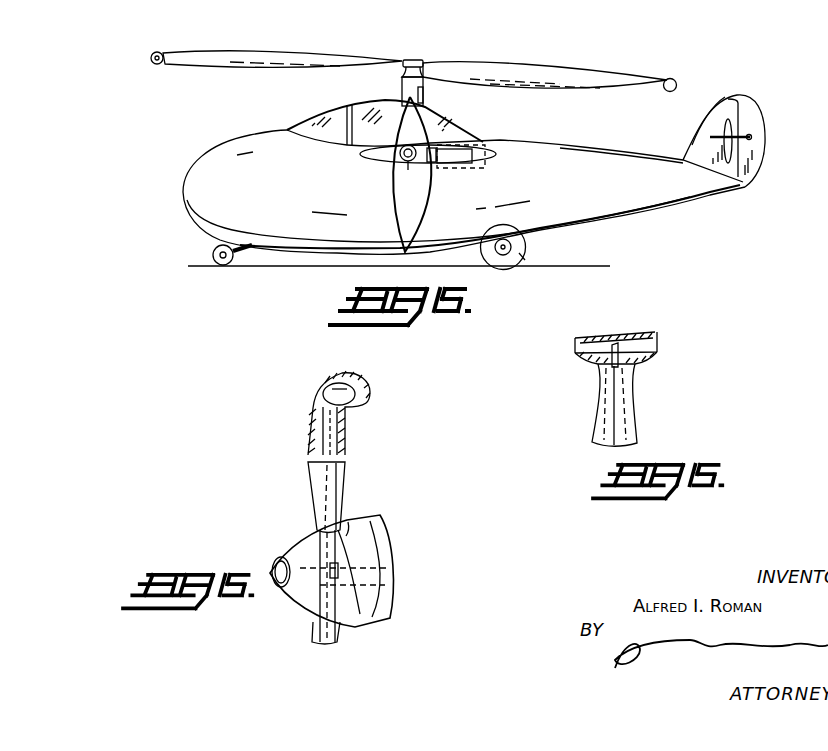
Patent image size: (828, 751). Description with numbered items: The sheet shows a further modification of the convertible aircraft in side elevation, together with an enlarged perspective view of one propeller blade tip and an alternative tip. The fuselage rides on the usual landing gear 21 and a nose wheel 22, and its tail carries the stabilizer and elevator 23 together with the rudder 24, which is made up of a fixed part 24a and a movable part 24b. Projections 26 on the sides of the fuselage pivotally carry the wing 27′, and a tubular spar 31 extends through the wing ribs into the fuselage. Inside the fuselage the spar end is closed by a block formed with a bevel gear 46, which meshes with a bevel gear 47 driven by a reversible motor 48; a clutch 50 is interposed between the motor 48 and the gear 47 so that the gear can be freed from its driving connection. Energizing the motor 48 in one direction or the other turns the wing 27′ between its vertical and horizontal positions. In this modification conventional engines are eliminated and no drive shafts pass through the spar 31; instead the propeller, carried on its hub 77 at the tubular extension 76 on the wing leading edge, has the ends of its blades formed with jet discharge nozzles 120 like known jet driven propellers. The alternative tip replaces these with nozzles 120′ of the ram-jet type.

In FIG. 15, the rudder 24 is at (752, 113).
In FIG. 15, the fixed part of rudder 24a is at (713, 126).
In FIG. 15, the movable part of rudder 24b is at (753, 124).
In FIG. 15, the stabilizer and elevator 23 is at (750, 141).
In FIG. 15, the jet discharge nozzle 120 is at (156, 64).
In FIG. 16, the jet discharge nozzle 120 is at (355, 395).
In FIG. 15, the propeller hub 77 is at (414, 58).
In FIG. 16, the propeller hub 77 is at (350, 535).
In FIG. 15, the tubular extension 76 is at (425, 93).
In FIG. 16, the tubular extension 76 is at (382, 545).
In FIG. 15, the wing 27′ is at (421, 205).
In FIG. 15, the bevel gear 46 is at (366, 160).
In FIG. 15, the tubular spar 31 is at (396, 168).
In FIG. 15, the bevel gear 47 is at (410, 166).
In FIG. 15, the clutch 50 is at (437, 164).
In FIG. 15, the projection 26 is at (493, 153).
In FIG. 15, the reversible motor 48 is at (474, 173).
In FIG. 15, the nose wheel 22 is at (213, 253).
In FIG. 15, the landing gear 21 is at (518, 251).
In FIG. 17, the ram-jet nozzle 120′ is at (643, 330).